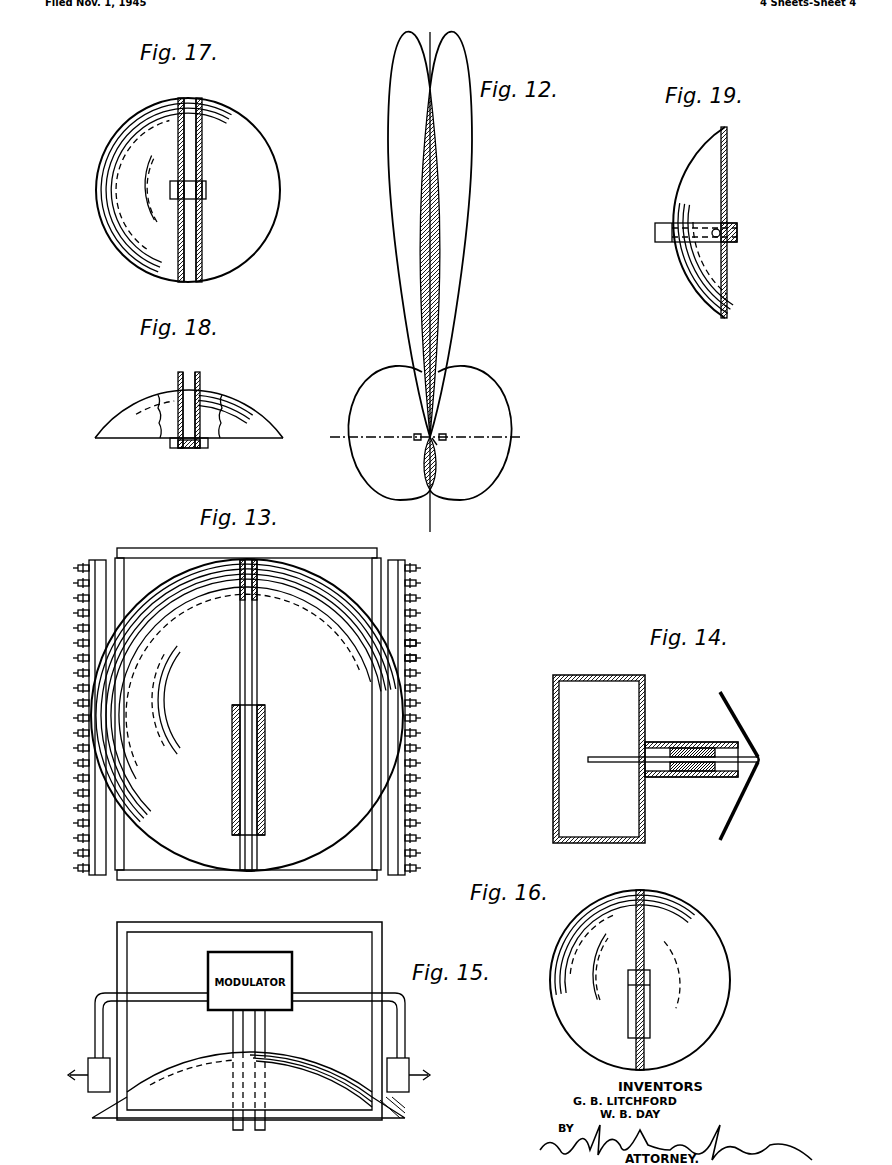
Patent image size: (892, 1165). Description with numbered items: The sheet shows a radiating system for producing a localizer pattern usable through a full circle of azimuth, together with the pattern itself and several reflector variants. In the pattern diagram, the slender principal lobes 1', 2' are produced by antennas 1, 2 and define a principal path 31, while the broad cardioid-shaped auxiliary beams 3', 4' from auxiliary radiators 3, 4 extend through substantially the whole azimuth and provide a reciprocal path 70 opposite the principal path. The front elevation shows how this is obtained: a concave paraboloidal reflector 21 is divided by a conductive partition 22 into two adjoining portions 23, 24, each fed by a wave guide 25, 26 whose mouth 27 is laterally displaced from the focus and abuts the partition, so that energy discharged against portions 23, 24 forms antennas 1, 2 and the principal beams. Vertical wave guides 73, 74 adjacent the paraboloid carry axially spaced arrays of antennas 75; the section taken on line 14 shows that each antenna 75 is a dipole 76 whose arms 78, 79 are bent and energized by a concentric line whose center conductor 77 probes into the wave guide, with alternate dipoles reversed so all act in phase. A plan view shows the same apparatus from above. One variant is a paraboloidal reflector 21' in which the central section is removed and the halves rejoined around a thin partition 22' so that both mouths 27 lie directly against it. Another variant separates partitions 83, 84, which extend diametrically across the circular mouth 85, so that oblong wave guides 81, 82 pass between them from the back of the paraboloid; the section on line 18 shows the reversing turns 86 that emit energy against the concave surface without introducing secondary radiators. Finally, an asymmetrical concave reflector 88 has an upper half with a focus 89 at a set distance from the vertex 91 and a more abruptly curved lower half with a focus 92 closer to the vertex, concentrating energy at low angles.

In FIG. 12, the antenna 1 is at (414, 463).
In FIG. 13, the antenna 1 is at (243, 680).
In FIG. 15, the antenna 1 is at (311, 1103).
In FIG. 12, the antenna 2 is at (445, 454).
In FIG. 13, the antenna 2 is at (177, 690).
In FIG. 15, the antenna 2 is at (249, 1100).
In FIG. 12, the auxiliary radiator 3 is at (453, 428).
In FIG. 13, the auxiliary radiator 3 is at (66, 718).
In FIG. 12, the auxiliary radiator 4 is at (402, 429).
In FIG. 13, the auxiliary radiator 4 is at (434, 718).
In FIG. 12, the principal lobe 1' is at (451, 234).
In FIG. 12, the principal lobe 2' is at (409, 234).
In FIG. 12, the auxiliary beam 3' is at (471, 433).
In FIG. 12, the auxiliary beam 4' is at (389, 433).
In FIG. 13, the section line 14 is at (386, 583).
In FIG. 17, the section line 18 is at (130, 190).
In FIG. 17, the concave reflector 21 is at (201, 187).
In FIG. 18, the concave reflector 21 is at (247, 406).
In FIG. 13, the concave reflector 21 is at (246, 676).
In FIG. 16, the paraboloidal reflector 21' is at (640, 969).
In FIG. 13, the partition 22 is at (248, 715).
In FIG. 16, the thin partition 22' is at (621, 966).
In FIG. 18, the reflector portion 23 is at (126, 416).
In FIG. 13, the reflector portion 23 is at (213, 852).
In FIG. 17, the reflector portion 24 is at (267, 172).
In FIG. 18, the reflector portion 24 is at (236, 414).
In FIG. 13, the reflector portion 24 is at (317, 850).
In FIG. 13, the wave guide 25 is at (232, 782).
In FIG. 13, the wave guide 26 is at (265, 772).
In FIG. 16, the mouth 27 is at (628, 978).
In FIG. 12, the principal path 31 is at (437, 232).
In FIG. 12, the reciprocal path 70 is at (432, 520).
In FIG. 13, the wave guide 73 is at (99, 559).
In FIG. 13, the wave guide 74 is at (400, 559).
In FIG. 14, the wave guide 74 is at (580, 675).
In FIG. 15, the wave guide 74 is at (412, 1090).
In FIG. 13, the antenna 75 is at (417, 659).
In FIG. 14, the antenna 75 is at (690, 742).
In FIG. 15, the antenna 75 is at (412, 1066).
In FIG. 14, the dipole 76 is at (772, 762).
In FIG. 14, the center conductor 77 is at (610, 757).
In FIG. 14, the dipole arm 78 is at (745, 722).
In FIG. 14, the dipole arm 79 is at (740, 820).
In FIG. 18, the wave guide 81 is at (179, 382).
In FIG. 18, the wave guide 82 is at (200, 383).
In FIG. 17, the partition 83 is at (152, 117).
In FIG. 17, the partition 84 is at (212, 117).
In FIG. 18, the mouth 85 is at (246, 440).
In FIG. 17, the reversing turn 86 is at (175, 199).
In FIG. 18, the reversing turn 86 is at (196, 450).
In FIG. 19, the concave reflector 88 is at (693, 170).
In FIG. 19, the focus 89 is at (728, 222).
In FIG. 19, the vertex 91 is at (663, 224).
In FIG. 19, the focus 92 is at (716, 233).